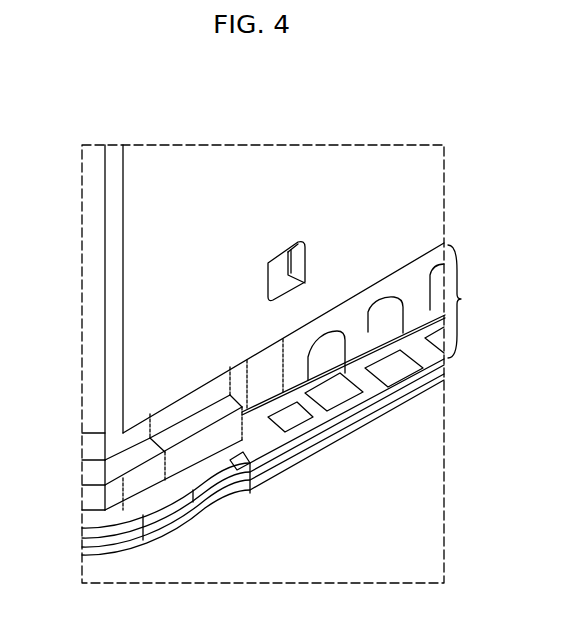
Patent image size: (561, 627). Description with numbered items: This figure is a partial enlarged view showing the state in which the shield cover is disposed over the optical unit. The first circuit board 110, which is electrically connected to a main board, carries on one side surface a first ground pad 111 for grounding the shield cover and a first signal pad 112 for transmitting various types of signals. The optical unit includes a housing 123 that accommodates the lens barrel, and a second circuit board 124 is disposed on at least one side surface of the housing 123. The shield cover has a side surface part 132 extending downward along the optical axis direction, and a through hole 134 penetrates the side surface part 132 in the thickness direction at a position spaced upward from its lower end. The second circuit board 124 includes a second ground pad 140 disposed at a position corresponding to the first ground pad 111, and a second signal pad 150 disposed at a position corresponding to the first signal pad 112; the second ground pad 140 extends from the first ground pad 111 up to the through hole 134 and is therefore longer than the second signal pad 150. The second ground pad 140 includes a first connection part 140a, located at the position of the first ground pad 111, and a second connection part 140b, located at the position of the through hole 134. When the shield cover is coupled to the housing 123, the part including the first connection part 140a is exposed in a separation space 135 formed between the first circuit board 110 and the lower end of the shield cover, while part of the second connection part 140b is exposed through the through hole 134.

The first circuit board 110 is at (345, 428).
The first ground pad 111 is at (280, 437).
The first signal pad 112 is at (342, 395).
The housing 123 is at (104, 448).
The second circuit board 124 is at (405, 282).
The side surface part 132 is at (430, 172).
The through hole 134 is at (307, 262).
The separation space 135 is at (461, 301).
The second ground pad 140 is at (263, 360).
The first connection part 140a is at (250, 470).
The second connection part 140b is at (273, 263).
The second signal pad 150 is at (425, 361).